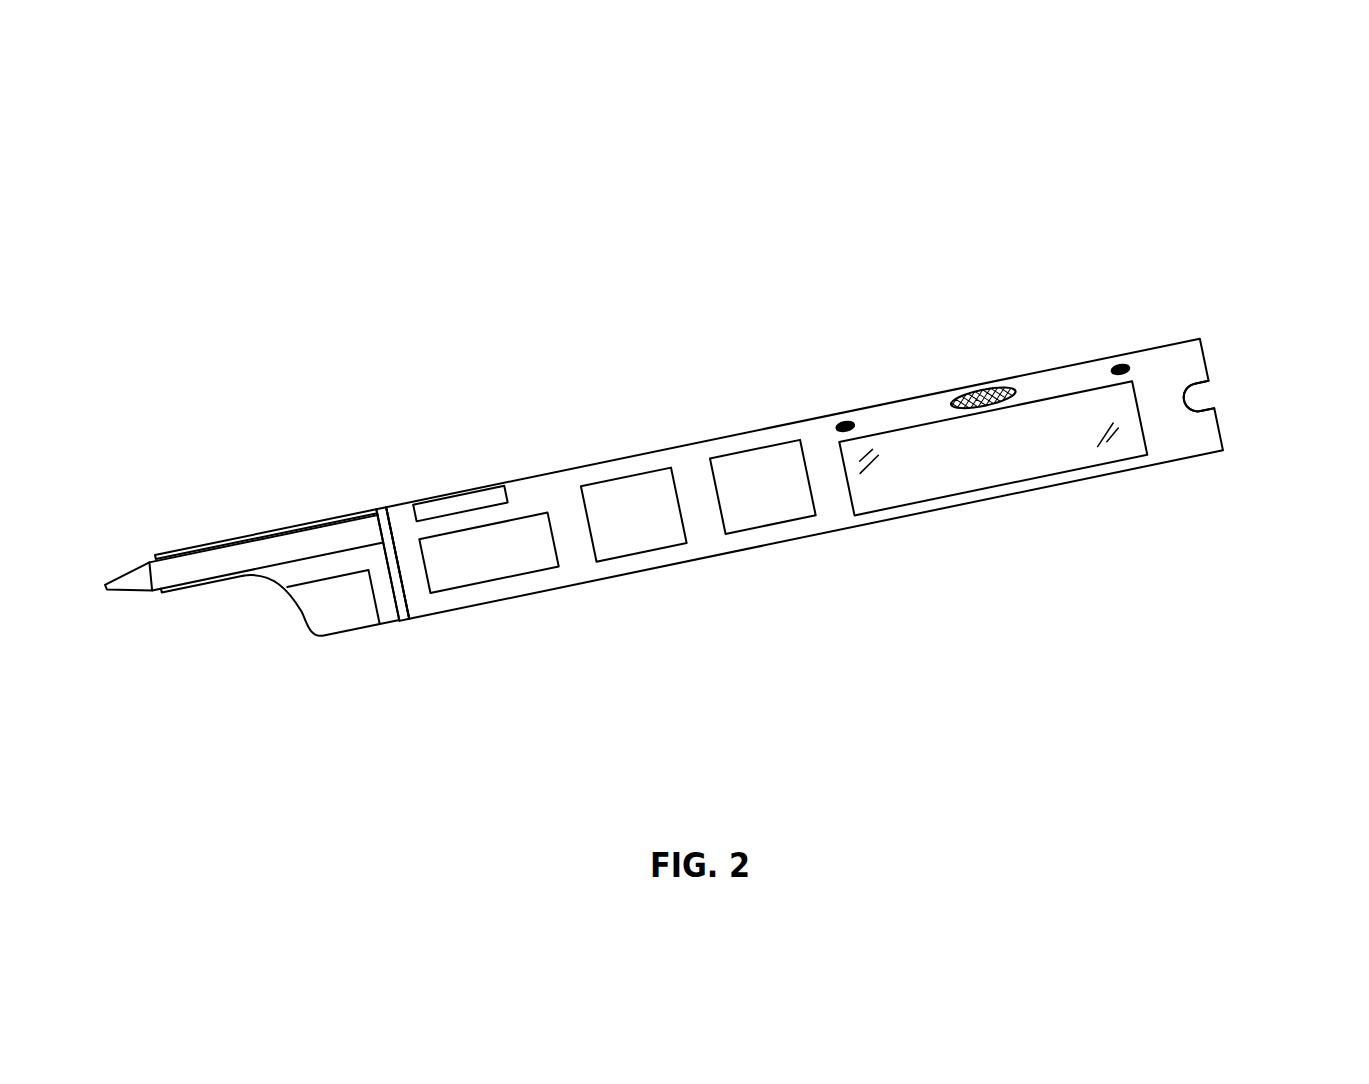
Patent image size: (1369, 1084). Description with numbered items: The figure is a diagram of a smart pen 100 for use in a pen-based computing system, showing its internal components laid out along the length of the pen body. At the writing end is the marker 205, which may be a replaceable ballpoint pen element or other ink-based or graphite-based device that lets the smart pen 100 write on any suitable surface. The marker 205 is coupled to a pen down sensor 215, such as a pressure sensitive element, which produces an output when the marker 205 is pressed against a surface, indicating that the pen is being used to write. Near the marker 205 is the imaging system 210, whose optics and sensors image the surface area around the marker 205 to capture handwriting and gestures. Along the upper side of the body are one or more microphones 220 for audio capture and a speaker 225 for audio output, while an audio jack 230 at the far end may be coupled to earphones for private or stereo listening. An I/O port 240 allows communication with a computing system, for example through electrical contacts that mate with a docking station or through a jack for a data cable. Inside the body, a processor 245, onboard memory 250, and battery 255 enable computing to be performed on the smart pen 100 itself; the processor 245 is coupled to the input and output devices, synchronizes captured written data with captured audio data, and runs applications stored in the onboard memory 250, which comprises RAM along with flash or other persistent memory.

The smart pen 100 is at (583, 254).
The marker 205 is at (106, 587).
The imaging system 210 is at (357, 617).
The pen down sensor 215 is at (402, 617).
The microphones 220 is at (848, 426).
The speaker 225 is at (982, 388).
The audio jack 230 is at (1205, 395).
The I/O port 240 is at (475, 488).
The processor 245 is at (784, 499).
The onboard memory 250 is at (657, 528).
The battery 255 is at (507, 565).